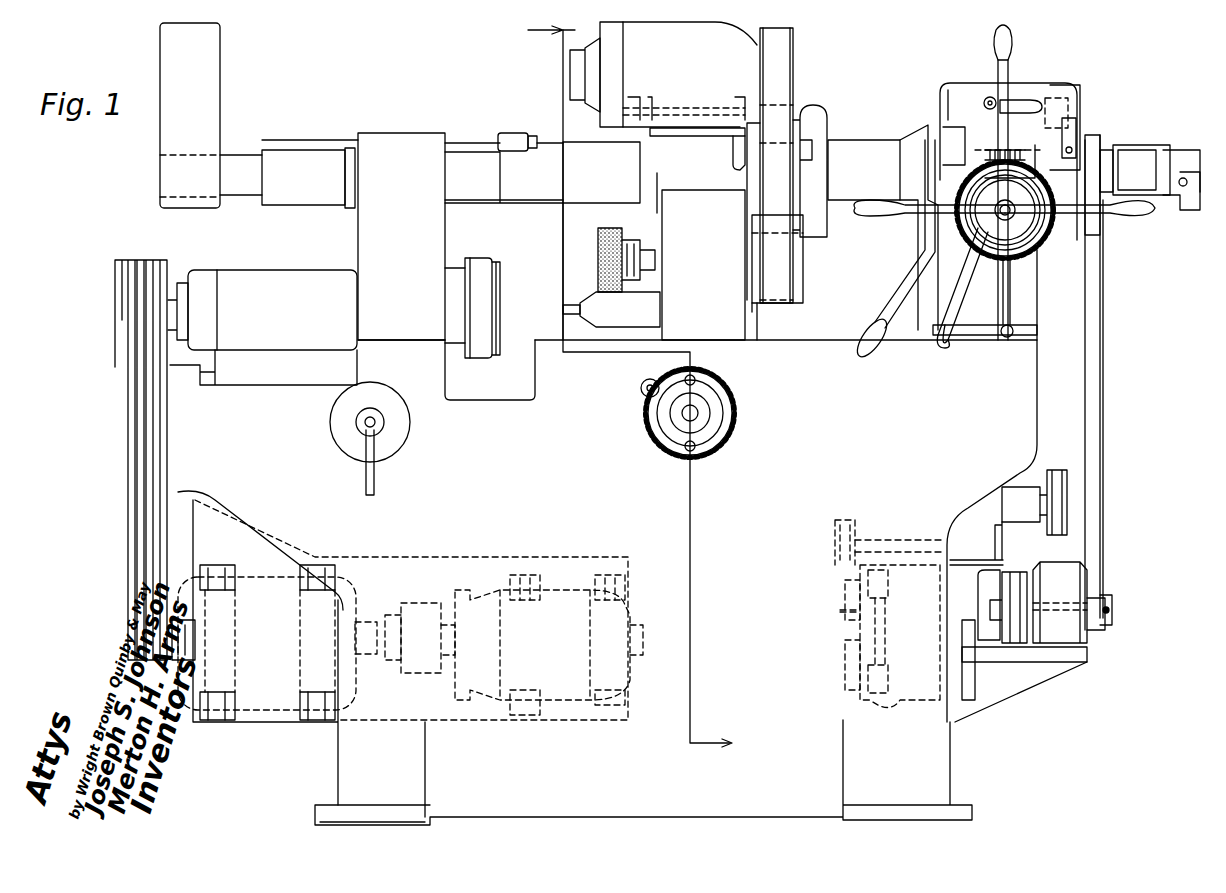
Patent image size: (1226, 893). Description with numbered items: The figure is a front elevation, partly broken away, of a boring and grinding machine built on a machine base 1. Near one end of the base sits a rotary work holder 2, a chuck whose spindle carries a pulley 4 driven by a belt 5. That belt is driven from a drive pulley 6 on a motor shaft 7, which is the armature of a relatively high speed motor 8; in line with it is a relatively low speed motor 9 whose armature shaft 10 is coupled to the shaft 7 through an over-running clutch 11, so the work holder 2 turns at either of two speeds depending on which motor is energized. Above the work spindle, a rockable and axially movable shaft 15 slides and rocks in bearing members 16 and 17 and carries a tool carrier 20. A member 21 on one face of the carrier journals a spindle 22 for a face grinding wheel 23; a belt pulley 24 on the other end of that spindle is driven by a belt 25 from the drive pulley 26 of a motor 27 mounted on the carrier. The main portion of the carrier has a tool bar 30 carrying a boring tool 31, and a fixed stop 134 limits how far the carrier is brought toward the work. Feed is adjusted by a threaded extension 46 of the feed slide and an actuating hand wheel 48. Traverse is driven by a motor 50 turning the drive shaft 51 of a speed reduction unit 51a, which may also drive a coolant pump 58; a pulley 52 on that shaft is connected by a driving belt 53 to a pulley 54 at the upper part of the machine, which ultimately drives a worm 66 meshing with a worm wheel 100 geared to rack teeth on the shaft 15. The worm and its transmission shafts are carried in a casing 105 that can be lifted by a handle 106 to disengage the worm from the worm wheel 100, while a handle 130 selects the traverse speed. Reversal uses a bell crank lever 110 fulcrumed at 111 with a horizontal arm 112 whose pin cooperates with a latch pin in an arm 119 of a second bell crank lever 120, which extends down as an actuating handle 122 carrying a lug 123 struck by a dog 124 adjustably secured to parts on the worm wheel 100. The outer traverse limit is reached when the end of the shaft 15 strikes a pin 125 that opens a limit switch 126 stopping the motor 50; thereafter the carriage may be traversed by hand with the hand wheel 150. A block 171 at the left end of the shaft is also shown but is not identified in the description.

The machine base 1 is at (1022, 390).
The rotary work holder 2 is at (478, 275).
The pulley 4 is at (522, 58).
The driving belt 5 is at (140, 422).
The drive pulley 6 is at (180, 520).
The motor shaft 7 is at (378, 622).
The relatively high speed motor 8 is at (272, 690).
The relatively low speed motor 9 is at (550, 590).
The armature shaft 10 is at (455, 600).
The over-running clutch 11 is at (405, 612).
The rockable axially movable shaft 15 is at (300, 78).
The bearing member 16 is at (460, 266).
The bearing member 17 is at (915, 150).
The tool carrier 20 is at (701, 174).
The member 21 is at (703, 265).
The spindle 22 is at (758, 306).
The face grinding wheel 23 is at (606, 226).
The belt pulley 24 is at (800, 282).
The belt 25 is at (792, 165).
The drive pulley 26 is at (793, 45).
The motor 27 is at (663, 79).
The tool bar 30 is at (620, 309).
The boring tool 31 is at (571, 303).
The threaded extension 46 is at (700, 418).
The actuating hand wheel 48 is at (740, 412).
The motor 50 is at (870, 645).
The drive shaft 51 is at (1110, 615).
The speed reduction unit 51a is at (1070, 630).
The pulley 52 is at (1105, 598).
The driving belt 53 is at (1097, 405).
The pulley 54 is at (1100, 145).
The coolant pump 58 is at (1025, 490).
The worm 66 is at (1022, 148).
The worm wheel 100 is at (1045, 225).
The casing 105 is at (945, 100).
The handle 106 is at (905, 280).
The bell crank lever 110 is at (1076, 130).
The fulcrum 111 is at (1078, 98).
The substantially horizontal arm 112 is at (1062, 98).
The arm 119 is at (1015, 100).
The bell crank lever 120 is at (985, 100).
The actuating handle 122 is at (965, 285).
The lug 123 is at (1005, 210).
The dog 124 is at (1140, 214).
The pin 125 is at (1175, 150).
The limit switch 126 is at (1188, 200).
The handle 130 is at (1012, 34).
The fixed stop 134 is at (513, 133).
The hand wheel 150 is at (1010, 278).
The block 171 is at (190, 115).